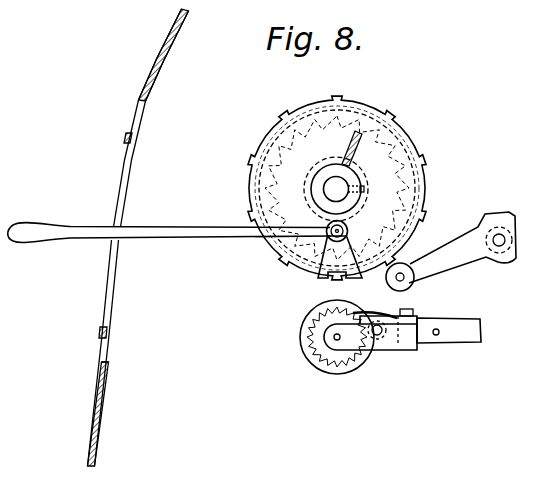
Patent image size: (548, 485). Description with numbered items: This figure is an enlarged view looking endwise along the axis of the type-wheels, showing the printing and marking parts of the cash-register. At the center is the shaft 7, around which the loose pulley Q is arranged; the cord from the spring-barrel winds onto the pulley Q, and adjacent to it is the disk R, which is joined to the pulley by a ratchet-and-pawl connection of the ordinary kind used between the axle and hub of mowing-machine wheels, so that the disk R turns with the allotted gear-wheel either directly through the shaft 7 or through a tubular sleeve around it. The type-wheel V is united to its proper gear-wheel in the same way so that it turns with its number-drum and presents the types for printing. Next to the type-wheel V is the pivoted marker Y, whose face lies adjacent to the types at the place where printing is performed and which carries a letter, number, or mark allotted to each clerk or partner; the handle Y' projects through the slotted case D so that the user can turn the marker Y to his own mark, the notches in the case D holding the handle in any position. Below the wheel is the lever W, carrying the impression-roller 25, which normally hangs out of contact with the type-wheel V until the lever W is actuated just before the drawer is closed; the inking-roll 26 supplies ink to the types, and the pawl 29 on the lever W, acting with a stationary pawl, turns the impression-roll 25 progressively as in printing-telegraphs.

The case D is at (138, 237).
The type-wheel V is at (337, 188).
The pulley Q is at (278, 147).
The disk R is at (337, 188).
The shaft 7 is at (337, 189).
The handle Y' is at (169, 223).
The marker Y is at (318, 260).
The inking-roll 26 is at (408, 264).
The impression-roller 25 is at (301, 338).
The pawl 29 is at (371, 349).
The lever W is at (449, 330).